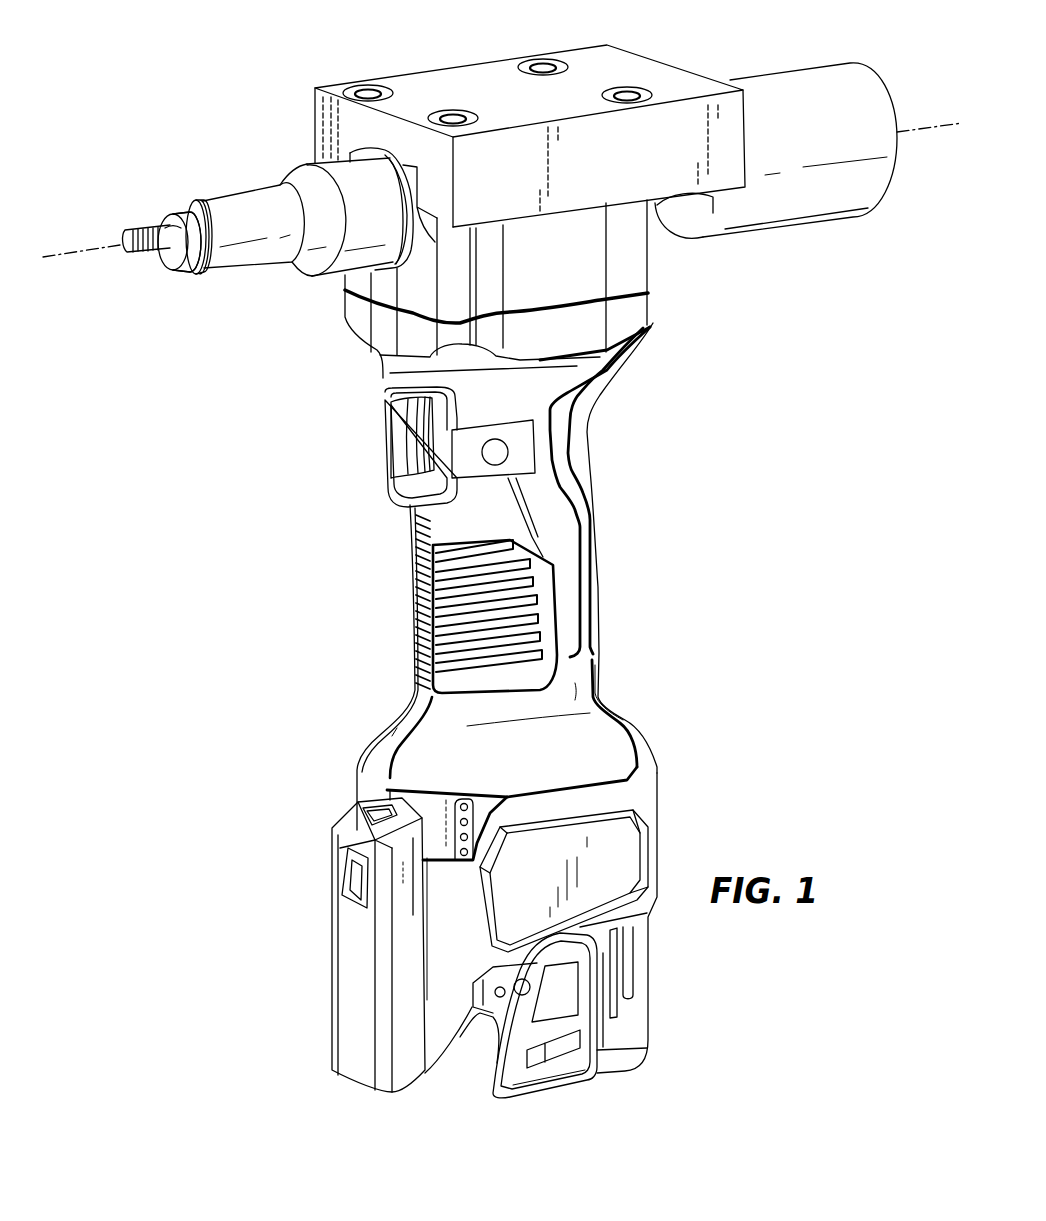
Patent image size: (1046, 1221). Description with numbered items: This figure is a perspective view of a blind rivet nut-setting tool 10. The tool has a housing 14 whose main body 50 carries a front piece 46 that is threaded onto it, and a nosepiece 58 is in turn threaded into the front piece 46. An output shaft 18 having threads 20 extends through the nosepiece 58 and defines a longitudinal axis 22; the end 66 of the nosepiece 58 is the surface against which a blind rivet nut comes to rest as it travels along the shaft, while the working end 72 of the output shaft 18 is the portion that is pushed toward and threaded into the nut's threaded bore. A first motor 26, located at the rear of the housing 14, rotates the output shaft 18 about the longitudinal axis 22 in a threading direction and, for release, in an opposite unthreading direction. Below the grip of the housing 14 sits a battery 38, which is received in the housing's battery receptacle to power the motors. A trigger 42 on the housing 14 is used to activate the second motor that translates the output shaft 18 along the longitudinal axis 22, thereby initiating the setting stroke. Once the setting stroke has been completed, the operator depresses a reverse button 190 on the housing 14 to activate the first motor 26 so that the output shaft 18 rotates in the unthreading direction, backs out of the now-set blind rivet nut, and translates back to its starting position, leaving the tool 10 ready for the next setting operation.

The blind rivet nut-setting tool 10 is at (248, 68).
The housing 14 is at (488, 628).
The output shaft 18 is at (172, 213).
The threads 20 is at (138, 253).
The longitudinal axis 22 is at (89, 247).
The first motor 26 is at (792, 208).
The battery 38 is at (632, 1018).
The trigger 42 is at (398, 437).
The front piece 46 is at (253, 250).
The main body 50 is at (345, 277).
The nosepiece 58 is at (198, 270).
The end of the nosepiece 66 is at (160, 262).
The working end 72 is at (177, 249).
The reverse button 190 is at (495, 455).